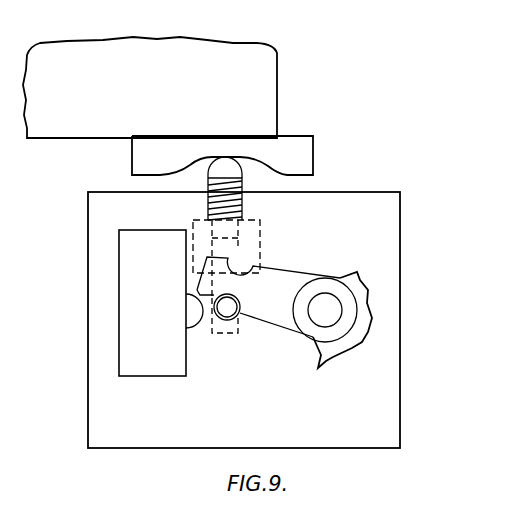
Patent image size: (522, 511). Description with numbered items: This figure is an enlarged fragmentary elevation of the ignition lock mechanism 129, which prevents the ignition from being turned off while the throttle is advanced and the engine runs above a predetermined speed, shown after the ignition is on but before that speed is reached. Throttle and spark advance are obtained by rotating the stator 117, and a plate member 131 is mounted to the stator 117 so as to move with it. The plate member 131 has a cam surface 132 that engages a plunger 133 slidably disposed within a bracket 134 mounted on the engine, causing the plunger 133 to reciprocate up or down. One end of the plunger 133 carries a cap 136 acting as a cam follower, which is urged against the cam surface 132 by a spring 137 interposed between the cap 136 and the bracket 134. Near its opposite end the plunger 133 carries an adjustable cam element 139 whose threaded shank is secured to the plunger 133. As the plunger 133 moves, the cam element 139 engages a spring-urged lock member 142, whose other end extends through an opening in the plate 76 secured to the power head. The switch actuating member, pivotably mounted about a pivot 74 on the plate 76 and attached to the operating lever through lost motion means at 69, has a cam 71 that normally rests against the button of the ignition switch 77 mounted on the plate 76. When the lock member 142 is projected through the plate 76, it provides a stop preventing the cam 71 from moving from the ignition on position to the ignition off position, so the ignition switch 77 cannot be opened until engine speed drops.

The stator 117 is at (90, 127).
The plate member 131 is at (163, 147).
The cam surface 132 is at (190, 165).
The cap 136 is at (227, 170).
The spring 137 is at (207, 198).
The ignition lock mechanism 129 is at (318, 223).
The plunger 133 is at (236, 226).
The bracket 134 is at (256, 250).
The cam element 139 is at (238, 280).
The plate 76 is at (97, 393).
The ignition switch 77 is at (158, 368).
The cam 71 is at (268, 317).
The lock member 142 is at (226, 312).
The lost motion means attachment 69 is at (322, 358).
The pivot 74 is at (320, 317).